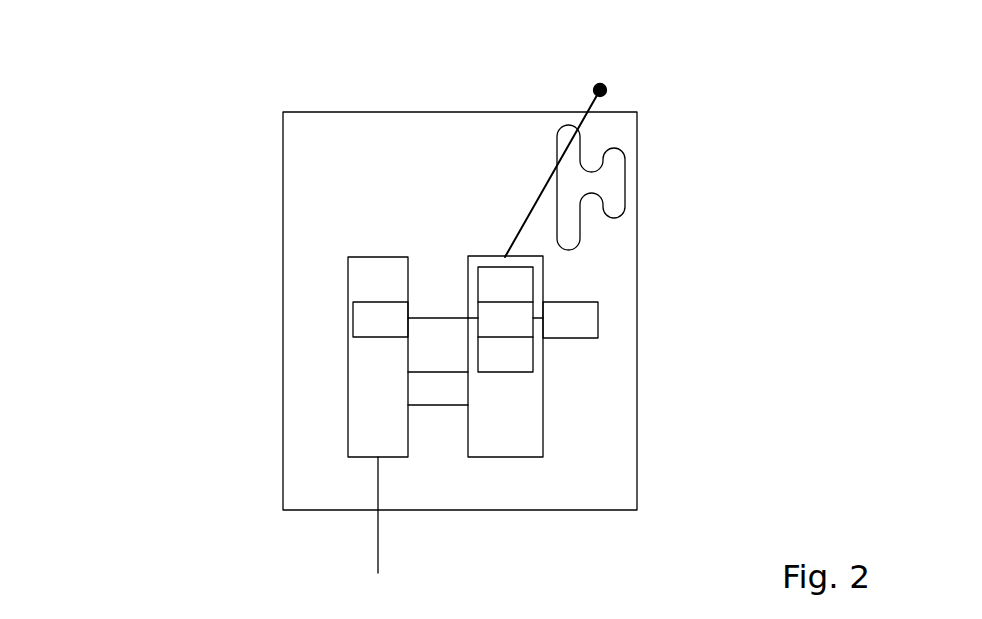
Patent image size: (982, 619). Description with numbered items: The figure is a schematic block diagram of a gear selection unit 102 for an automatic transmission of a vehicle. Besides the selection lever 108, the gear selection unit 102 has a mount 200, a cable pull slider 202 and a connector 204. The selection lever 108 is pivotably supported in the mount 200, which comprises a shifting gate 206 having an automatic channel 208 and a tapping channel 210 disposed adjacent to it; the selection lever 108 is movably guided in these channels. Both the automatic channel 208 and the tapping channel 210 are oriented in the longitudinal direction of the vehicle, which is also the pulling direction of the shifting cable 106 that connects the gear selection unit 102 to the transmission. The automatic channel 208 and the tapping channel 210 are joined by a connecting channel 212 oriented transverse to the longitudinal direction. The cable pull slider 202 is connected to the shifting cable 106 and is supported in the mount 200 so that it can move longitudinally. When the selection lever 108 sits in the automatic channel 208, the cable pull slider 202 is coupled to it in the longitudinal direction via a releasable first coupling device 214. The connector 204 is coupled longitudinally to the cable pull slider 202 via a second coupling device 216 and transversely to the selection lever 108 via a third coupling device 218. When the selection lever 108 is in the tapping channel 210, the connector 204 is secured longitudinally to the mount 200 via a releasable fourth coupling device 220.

The gear selection unit 102 is at (203, 95).
The shifting cable 106 is at (378, 543).
The selection lever 108 is at (592, 104).
The mount 200 is at (283, 200).
The cable pull slider 202 is at (348, 365).
The connector 204 is at (425, 318).
The shifting gate 206 is at (615, 147).
The automatic channel 208 is at (570, 237).
The tapping channel 210 is at (613, 163).
The connecting channel 212 is at (602, 180).
The first coupling device 214 is at (430, 407).
The second coupling device 216 is at (353, 320).
The third coupling device 218 is at (507, 338).
The fourth coupling device 220 is at (598, 320).